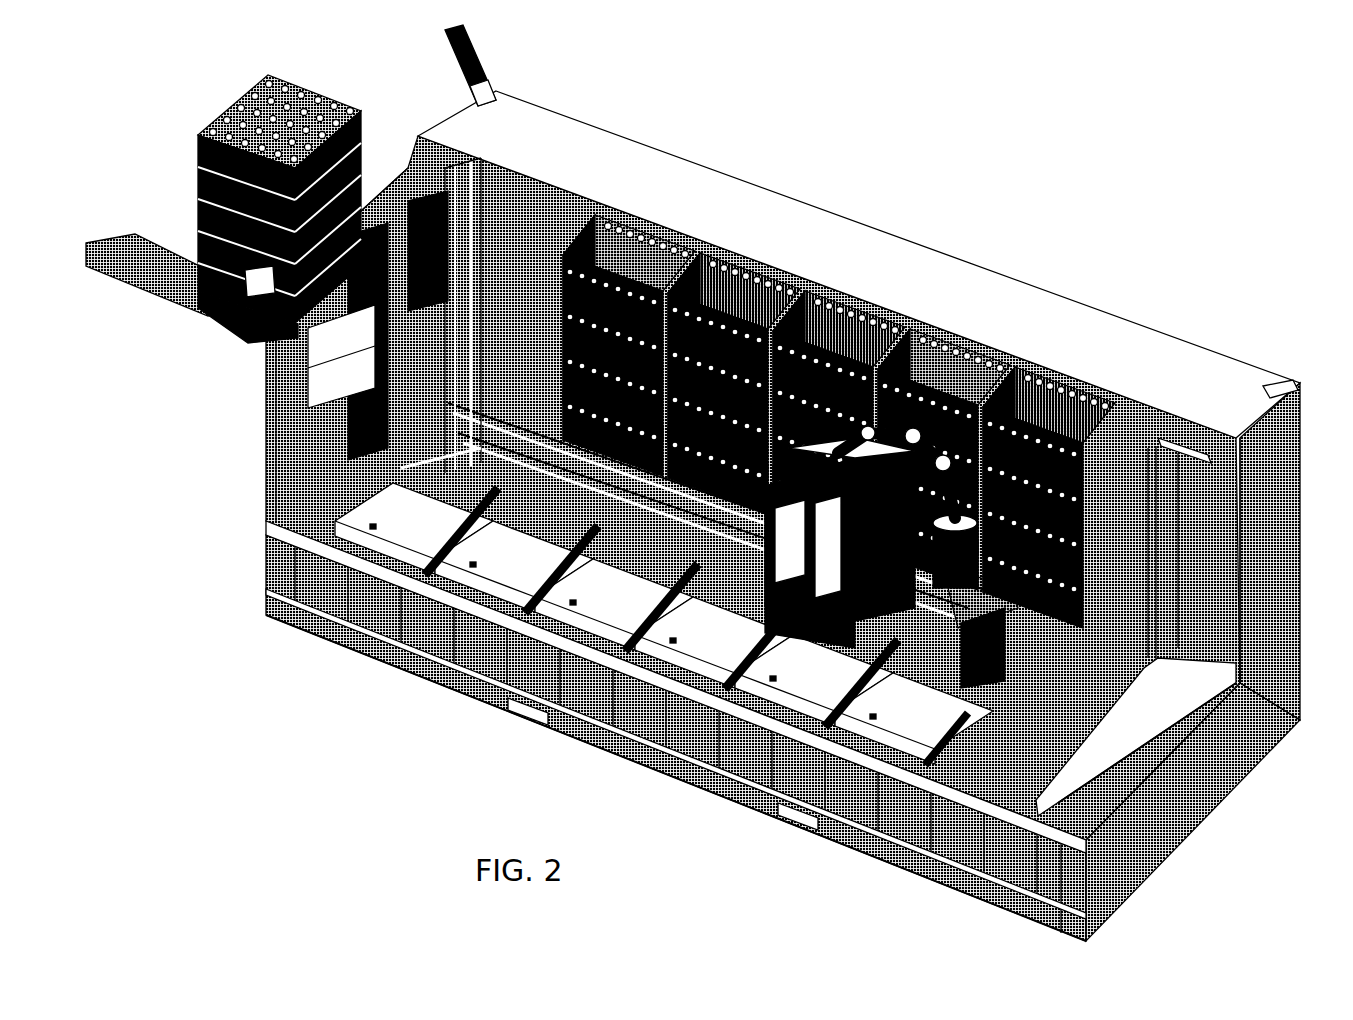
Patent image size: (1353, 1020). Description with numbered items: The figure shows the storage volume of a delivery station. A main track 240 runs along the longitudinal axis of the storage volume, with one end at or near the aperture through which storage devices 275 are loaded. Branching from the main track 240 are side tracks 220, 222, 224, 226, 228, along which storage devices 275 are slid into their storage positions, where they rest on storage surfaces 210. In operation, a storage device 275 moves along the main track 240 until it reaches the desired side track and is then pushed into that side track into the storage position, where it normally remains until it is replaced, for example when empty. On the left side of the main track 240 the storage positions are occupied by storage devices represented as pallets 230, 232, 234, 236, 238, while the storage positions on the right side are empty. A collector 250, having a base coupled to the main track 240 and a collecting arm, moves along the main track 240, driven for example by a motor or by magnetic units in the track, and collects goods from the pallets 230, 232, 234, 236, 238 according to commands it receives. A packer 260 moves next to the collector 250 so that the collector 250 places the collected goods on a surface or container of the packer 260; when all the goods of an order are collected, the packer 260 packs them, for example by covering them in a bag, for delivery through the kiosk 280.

The storage surfaces 210 is at (784, 706).
The side track 220 is at (838, 690).
The side track 222 is at (734, 661).
The side track 224 is at (648, 612).
The side track 226 is at (552, 566).
The side track 228 is at (458, 531).
The pallet 230 is at (1067, 374).
The pallet 232 is at (957, 328).
The pallet 234 is at (853, 294).
The pallet 236 is at (767, 258).
The pallet 238 is at (656, 222).
The main track 240 is at (1127, 703).
The collector 250 is at (872, 690).
The packer 260 is at (850, 634).
The storage devices 275 is at (217, 103).
The kiosk 280 is at (262, 433).